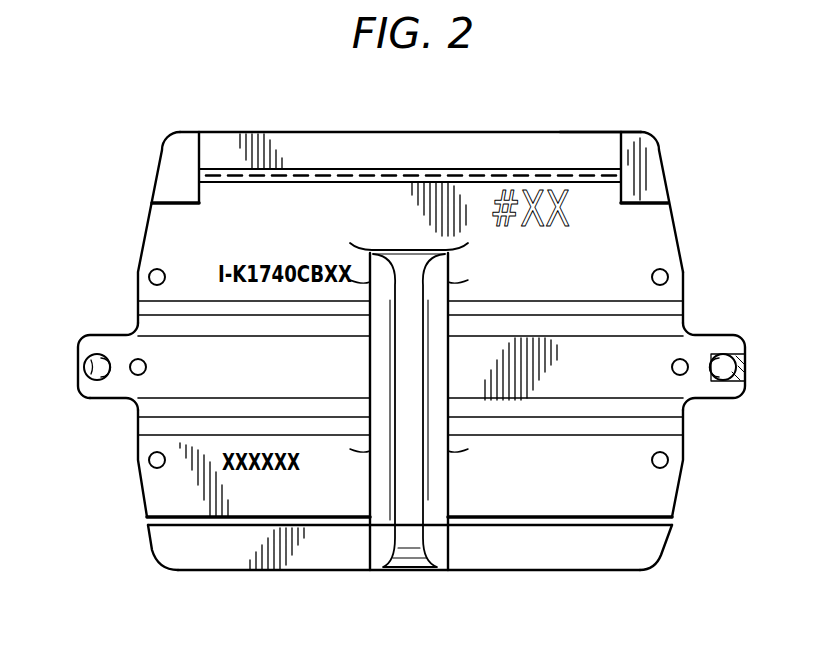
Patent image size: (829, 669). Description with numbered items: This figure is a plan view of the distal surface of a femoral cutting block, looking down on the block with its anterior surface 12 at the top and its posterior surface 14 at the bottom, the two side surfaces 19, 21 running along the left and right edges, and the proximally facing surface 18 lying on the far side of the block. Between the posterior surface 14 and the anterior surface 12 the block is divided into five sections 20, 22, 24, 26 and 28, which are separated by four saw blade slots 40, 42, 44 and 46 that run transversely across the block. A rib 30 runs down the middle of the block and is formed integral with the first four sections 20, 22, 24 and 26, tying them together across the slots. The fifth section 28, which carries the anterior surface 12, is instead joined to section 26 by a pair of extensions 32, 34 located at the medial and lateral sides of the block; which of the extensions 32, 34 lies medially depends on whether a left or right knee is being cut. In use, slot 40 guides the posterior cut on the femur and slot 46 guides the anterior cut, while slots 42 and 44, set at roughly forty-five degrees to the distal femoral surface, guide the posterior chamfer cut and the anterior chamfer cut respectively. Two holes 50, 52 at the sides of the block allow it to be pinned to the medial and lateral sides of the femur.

The anterior surface 12 is at (523, 131).
The posterior surface 14 is at (556, 573).
The proximally facing surface 18 is at (591, 143).
The side surface 19 is at (140, 242).
The section 20 is at (662, 566).
The side surface 21 is at (684, 272).
The section 22 is at (140, 480).
The section 24 is at (112, 390).
The section 26 is at (673, 222).
The section 28 is at (252, 131).
The rib 30 is at (408, 468).
The extension 32 is at (186, 184).
The extension 34 is at (632, 203).
The saw blade slot 40 is at (150, 523).
The saw blade slot 42 is at (683, 425).
The saw blade slot 44 is at (684, 309).
The saw blade slot 46 is at (626, 182).
The hole 50 is at (87, 352).
The hole 52 is at (741, 390).